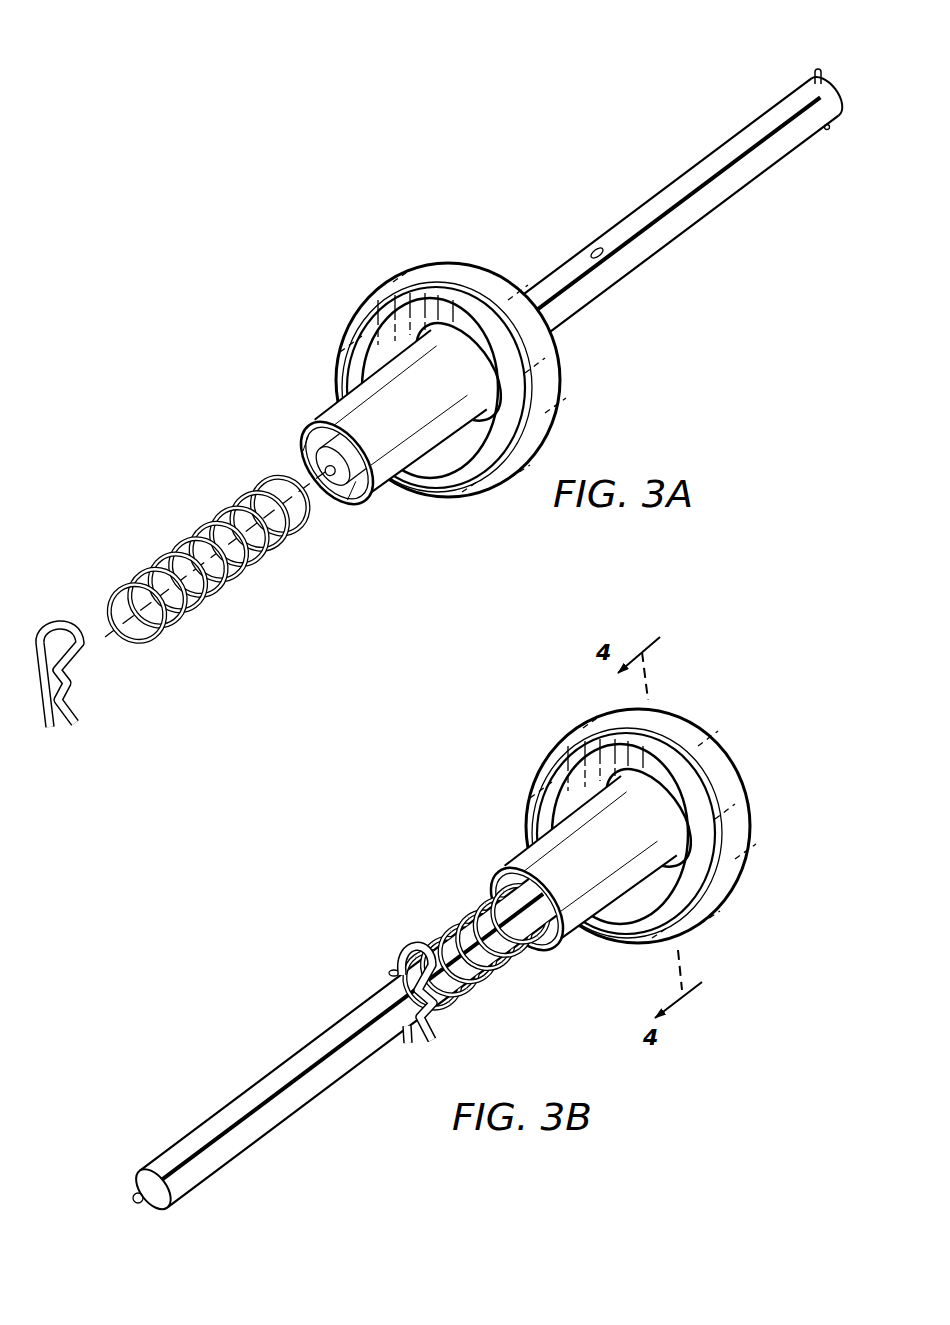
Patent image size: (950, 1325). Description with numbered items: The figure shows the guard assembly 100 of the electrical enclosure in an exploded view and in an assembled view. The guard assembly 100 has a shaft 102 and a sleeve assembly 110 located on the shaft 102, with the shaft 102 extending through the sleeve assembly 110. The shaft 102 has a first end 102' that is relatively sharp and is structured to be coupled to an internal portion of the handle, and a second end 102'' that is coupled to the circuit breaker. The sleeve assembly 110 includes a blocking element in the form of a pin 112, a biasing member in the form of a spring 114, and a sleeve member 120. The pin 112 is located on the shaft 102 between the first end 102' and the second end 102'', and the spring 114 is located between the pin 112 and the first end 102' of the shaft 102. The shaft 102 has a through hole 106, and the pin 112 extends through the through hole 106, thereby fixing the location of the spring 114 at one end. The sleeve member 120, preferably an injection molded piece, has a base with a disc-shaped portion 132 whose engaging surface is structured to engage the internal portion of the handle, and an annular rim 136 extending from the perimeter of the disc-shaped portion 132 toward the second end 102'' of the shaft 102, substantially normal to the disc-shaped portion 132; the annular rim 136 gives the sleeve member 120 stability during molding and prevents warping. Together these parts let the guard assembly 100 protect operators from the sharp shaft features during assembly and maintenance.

In FIG. 3A, the guard assembly 100 is at (444, 369).
In FIG. 3B, the guard assembly 100 is at (477, 930).
In FIG. 3A, the shaft 102 is at (646, 231).
In FIG. 3B, the shaft 102 is at (343, 1046).
In FIG. 3A, the first end 102' is at (824, 70).
In FIG. 3B, the first end 102' is at (760, 699).
In FIG. 3A, the second end 102'' is at (336, 491).
In FIG. 3B, the second end 102'' is at (135, 1140).
In FIG. 3A, the through hole 106 is at (597, 248).
In FIG. 3B, the through hole 106 is at (392, 970).
In FIG. 3A, the sleeve assembly 110 is at (313, 400).
In FIG. 3B, the sleeve assembly 110 is at (493, 830).
In FIG. 3A, the pin 112 is at (77, 685).
In FIG. 3B, the pin 112 is at (437, 1023).
In FIG. 3A, the spring 114 is at (220, 593).
In FIG. 3B, the spring 114 is at (493, 977).
In FIG. 3A, the sleeve member 120 is at (380, 270).
In FIG. 3B, the sleeve member 120 is at (743, 872).
In FIG. 3B, the disc-shaped portion 132 is at (577, 793).
In FIG. 3B, the annular rim 136 is at (732, 925).